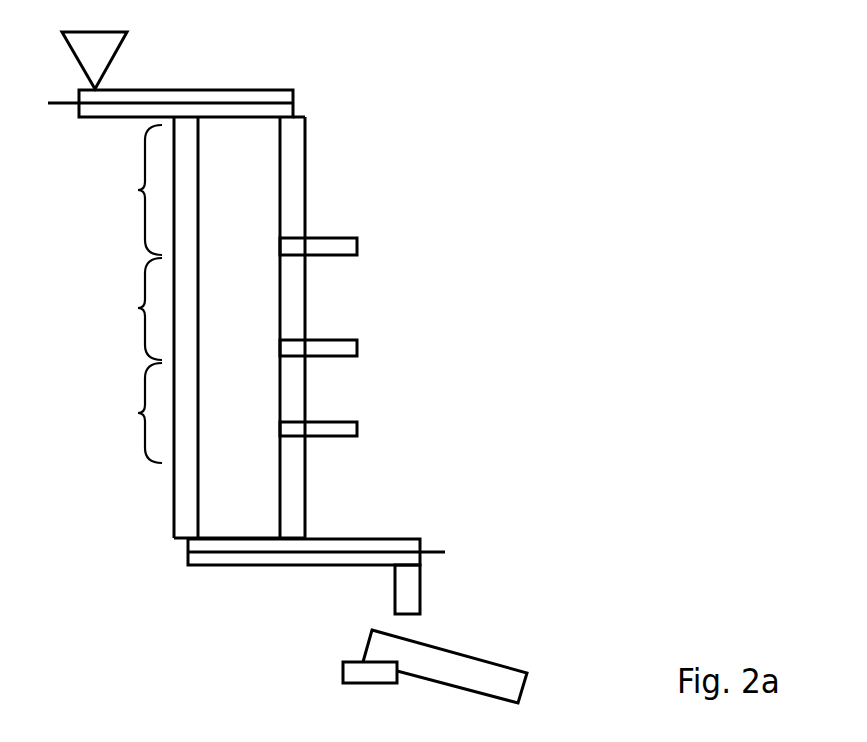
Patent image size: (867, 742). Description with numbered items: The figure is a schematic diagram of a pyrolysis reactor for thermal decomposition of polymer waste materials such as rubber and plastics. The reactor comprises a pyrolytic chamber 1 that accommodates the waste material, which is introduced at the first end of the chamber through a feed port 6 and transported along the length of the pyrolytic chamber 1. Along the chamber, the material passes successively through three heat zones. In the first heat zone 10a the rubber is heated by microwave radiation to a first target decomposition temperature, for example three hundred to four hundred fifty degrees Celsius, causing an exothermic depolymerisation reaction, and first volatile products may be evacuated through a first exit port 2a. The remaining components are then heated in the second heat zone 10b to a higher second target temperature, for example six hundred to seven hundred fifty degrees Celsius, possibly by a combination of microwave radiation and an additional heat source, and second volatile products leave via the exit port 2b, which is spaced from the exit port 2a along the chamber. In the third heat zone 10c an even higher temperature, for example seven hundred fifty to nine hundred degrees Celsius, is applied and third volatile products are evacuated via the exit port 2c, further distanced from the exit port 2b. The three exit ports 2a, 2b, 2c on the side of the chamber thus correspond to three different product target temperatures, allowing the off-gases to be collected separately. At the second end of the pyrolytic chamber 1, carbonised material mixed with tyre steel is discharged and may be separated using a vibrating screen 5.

The pyrolytic chamber 1 is at (223, 387).
The first exit port 2a is at (320, 248).
The second exit port 2b is at (320, 349).
The third exit port 2c is at (320, 428).
The vibrating screen 5 is at (492, 683).
The feed port 6 is at (108, 50).
The first heat zone 10a is at (138, 190).
The second heat zone 10b is at (138, 308).
The third heat zone 10c is at (138, 413).